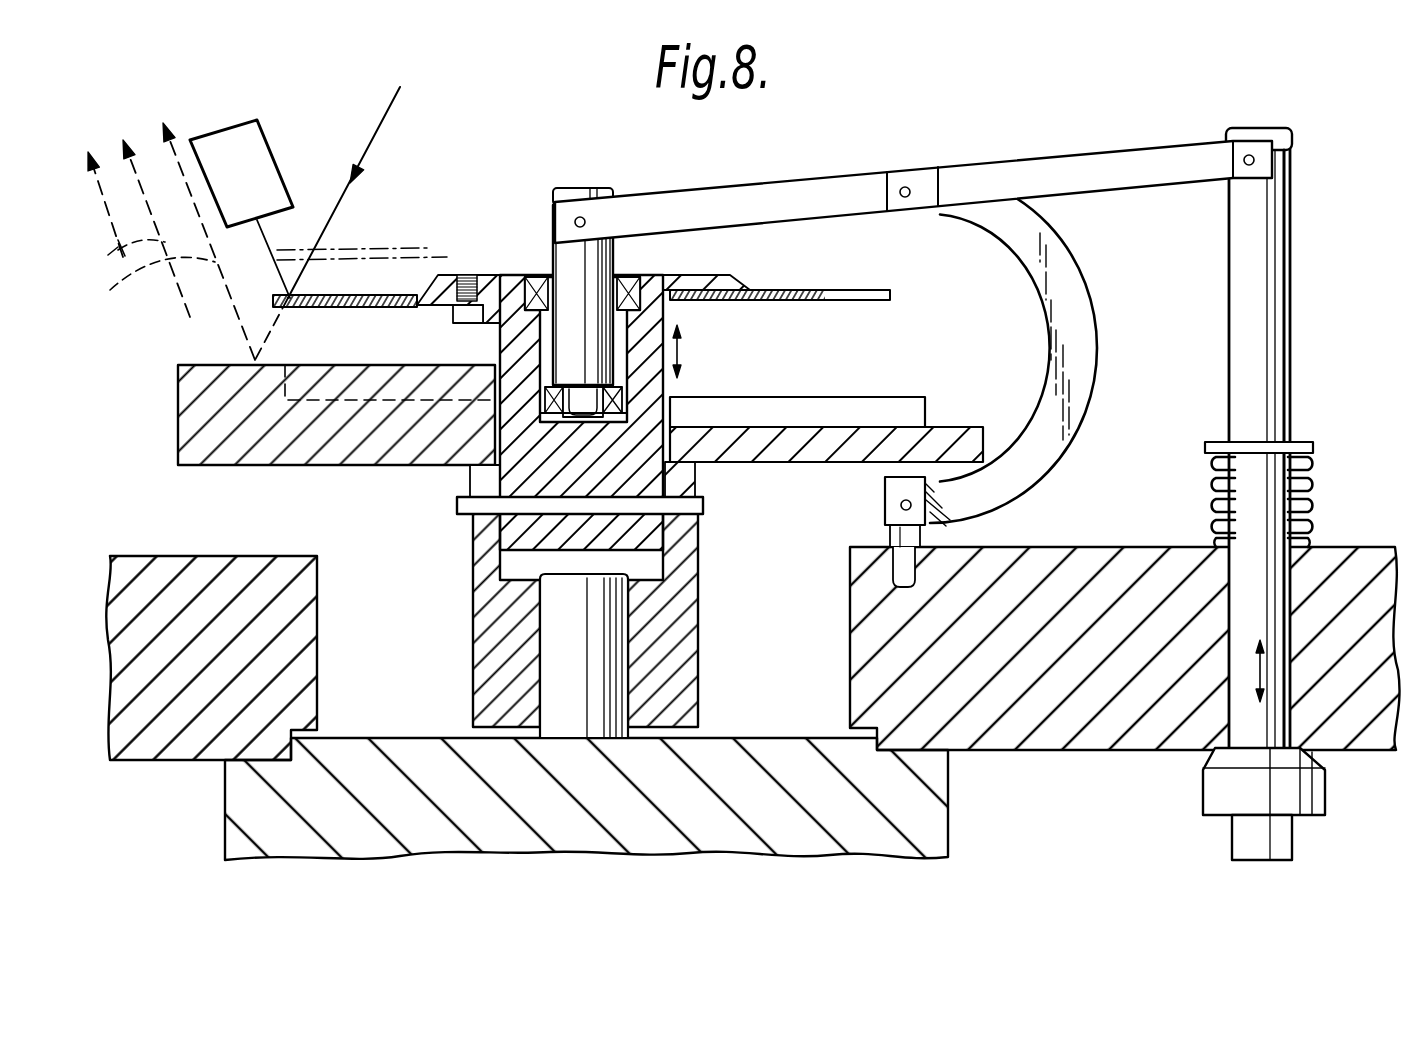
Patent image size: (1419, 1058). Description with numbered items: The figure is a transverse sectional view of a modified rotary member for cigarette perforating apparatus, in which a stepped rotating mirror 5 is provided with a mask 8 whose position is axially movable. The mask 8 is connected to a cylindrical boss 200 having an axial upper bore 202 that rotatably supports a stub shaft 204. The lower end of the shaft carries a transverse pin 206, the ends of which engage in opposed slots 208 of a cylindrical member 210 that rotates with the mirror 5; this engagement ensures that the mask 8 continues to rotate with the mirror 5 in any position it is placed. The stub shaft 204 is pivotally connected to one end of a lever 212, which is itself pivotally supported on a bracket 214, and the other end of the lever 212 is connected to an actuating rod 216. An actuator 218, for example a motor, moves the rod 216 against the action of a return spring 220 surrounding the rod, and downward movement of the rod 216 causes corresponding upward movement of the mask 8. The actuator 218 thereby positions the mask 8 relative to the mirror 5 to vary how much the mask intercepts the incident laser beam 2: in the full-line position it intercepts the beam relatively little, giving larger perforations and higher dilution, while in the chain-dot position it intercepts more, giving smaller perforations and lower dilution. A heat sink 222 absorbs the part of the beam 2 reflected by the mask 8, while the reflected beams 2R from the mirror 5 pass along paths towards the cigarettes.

The laser beam 2 is at (384, 123).
The reflected beams 2R is at (151, 282).
The stepped rotating mirror 5 is at (288, 457).
The mask 8 is at (780, 302).
The cylindrical boss 200 is at (517, 342).
The axial upper bore 202 is at (637, 270).
The stub shaft 204 is at (567, 263).
The transverse pin 206 is at (495, 518).
The opposed slots 208 is at (687, 485).
The cylindrical member 210 is at (682, 647).
The lever 212 is at (762, 197).
The bracket 214 is at (1078, 321).
The actuating rod 216 is at (1262, 311).
The actuator 218 is at (1200, 795).
The return spring 220 is at (1303, 497).
The heat sink 222 is at (247, 130).